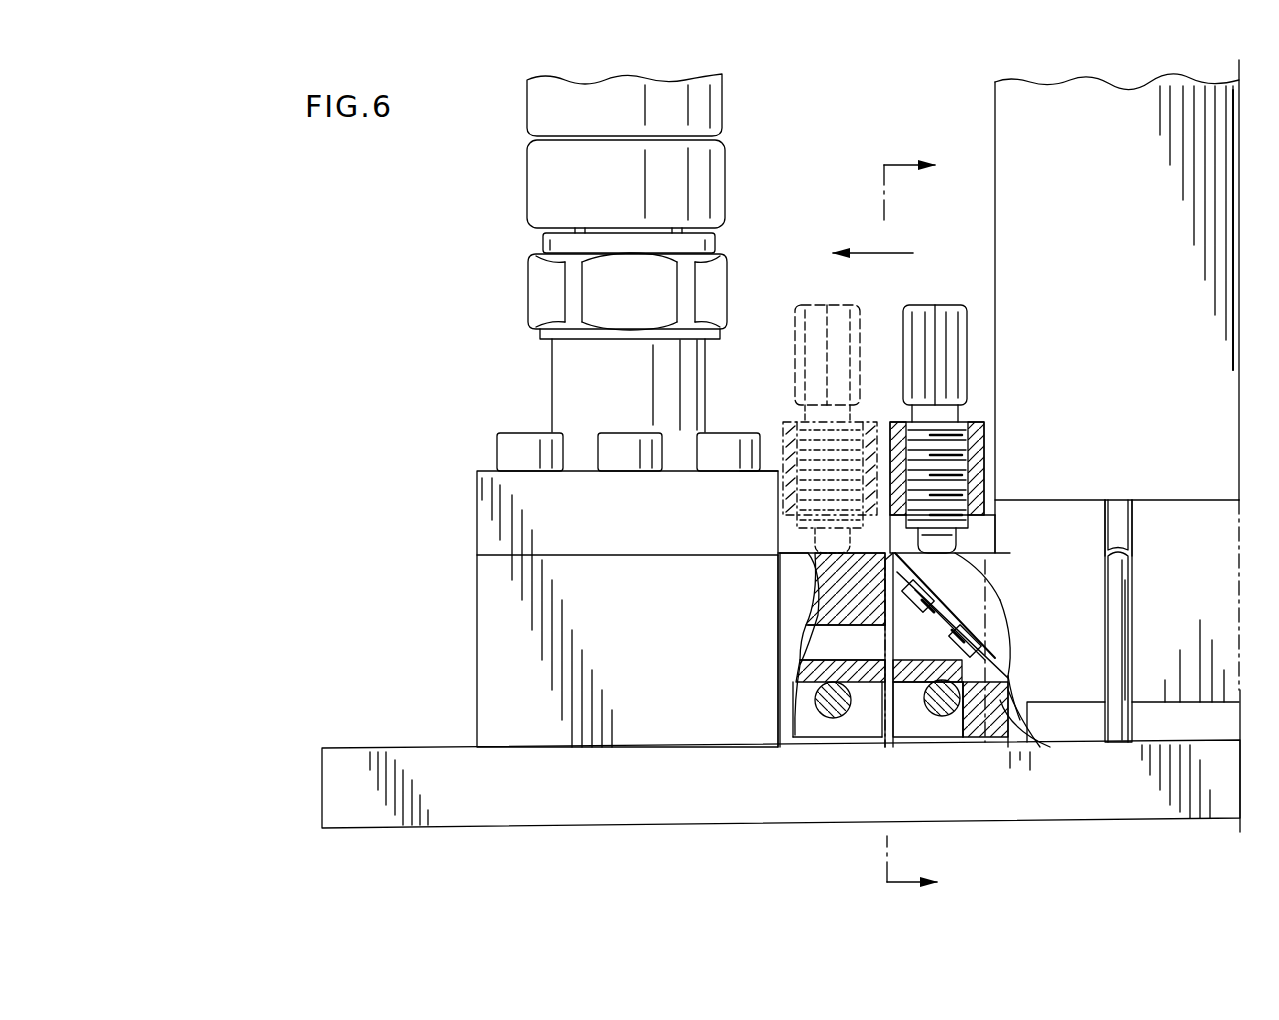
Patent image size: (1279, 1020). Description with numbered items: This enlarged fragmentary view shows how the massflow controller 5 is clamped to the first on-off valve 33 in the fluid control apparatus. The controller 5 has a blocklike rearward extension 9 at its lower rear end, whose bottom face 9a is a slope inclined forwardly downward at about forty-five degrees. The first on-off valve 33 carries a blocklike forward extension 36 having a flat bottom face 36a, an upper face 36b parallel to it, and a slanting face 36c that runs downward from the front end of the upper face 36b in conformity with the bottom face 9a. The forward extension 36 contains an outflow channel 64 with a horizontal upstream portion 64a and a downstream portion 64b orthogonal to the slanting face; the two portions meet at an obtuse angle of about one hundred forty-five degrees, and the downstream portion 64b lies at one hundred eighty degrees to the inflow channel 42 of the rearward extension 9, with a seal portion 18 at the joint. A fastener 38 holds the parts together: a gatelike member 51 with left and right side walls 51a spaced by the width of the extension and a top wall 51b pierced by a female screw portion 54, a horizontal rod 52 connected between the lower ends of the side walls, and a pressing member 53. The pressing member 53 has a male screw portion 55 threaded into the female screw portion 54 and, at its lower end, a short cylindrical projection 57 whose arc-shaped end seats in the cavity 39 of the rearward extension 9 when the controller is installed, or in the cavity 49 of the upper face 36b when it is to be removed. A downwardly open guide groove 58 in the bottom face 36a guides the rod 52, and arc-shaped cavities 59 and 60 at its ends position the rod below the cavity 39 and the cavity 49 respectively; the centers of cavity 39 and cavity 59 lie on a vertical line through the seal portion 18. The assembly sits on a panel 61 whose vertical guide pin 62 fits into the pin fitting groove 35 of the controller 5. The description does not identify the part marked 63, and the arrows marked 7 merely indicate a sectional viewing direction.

The massflow controller 5 is at (1005, 112).
The section line 7 is at (905, 526).
The rearward extension 9 is at (985, 603).
The bottom face 9a is at (1050, 748).
The seal portion 18 is at (990, 738).
The first on-off valve 33 is at (560, 372).
The pin fitting groove 35 is at (1122, 510).
The forward extension 36 is at (795, 660).
The bottom face 36a is at (800, 748).
The upper face 36b is at (798, 553).
The slanting face 36c is at (1005, 662).
The fastener 38 is at (828, 300).
The cavity 39 is at (965, 570).
The inflow channel 42 is at (975, 610).
The cavity 49 is at (790, 518).
The gatelike member 51 is at (975, 450).
The side wall 51a is at (935, 748).
The top wall 51b is at (892, 555).
The horizontal rod 52 is at (830, 718).
The pressing member 53 is at (965, 365).
The female screw portion 54 is at (952, 525).
The male screw portion 55 is at (978, 475).
The projection 57 is at (960, 555).
The guide groove 58 is at (860, 748).
The cavity 59 is at (975, 748).
The cavity 60 is at (805, 695).
The panel 61 is at (578, 800).
The guide pin 62 is at (1125, 620).
The bosses 63 is at (500, 447).
The outflow channel 64 is at (775, 632).
The upstream portion 64a is at (795, 612).
The downstream portion 64b is at (975, 622).